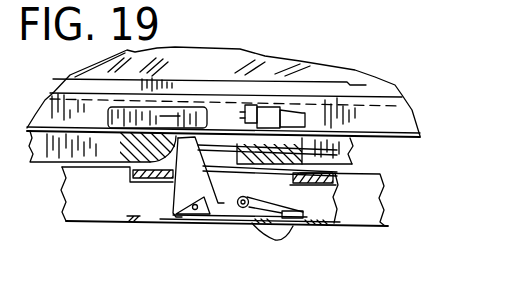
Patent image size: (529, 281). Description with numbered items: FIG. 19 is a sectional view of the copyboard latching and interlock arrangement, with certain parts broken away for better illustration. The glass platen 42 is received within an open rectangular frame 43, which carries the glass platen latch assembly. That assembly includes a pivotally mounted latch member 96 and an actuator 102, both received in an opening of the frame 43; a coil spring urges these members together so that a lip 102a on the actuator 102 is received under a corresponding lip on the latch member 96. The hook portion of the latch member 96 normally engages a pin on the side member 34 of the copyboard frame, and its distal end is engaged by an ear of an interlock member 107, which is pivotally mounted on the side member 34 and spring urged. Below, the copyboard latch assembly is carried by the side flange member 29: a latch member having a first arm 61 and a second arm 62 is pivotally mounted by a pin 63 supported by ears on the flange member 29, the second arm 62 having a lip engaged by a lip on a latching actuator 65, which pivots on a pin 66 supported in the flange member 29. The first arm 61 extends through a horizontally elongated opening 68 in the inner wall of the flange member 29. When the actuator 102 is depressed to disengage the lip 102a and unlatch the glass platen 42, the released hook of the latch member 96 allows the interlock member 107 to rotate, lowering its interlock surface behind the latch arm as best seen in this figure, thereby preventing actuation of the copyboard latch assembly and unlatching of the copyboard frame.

The side flange member 29 is at (388, 226).
The side member 34 is at (354, 154).
The glass platen 42 is at (266, 58).
The open rectangular frame 43 is at (402, 117).
The first arm 61 is at (185, 192).
The second arm 62 is at (228, 205).
The pin 63 is at (189, 220).
The latching actuator 65 is at (292, 229).
The pin 66 is at (272, 202).
The horizontally elongated opening 68 is at (290, 186).
The latch member 96 is at (110, 117).
The actuator 102 is at (297, 120).
The lip 102a is at (220, 140).
The interlock member 107 is at (222, 97).